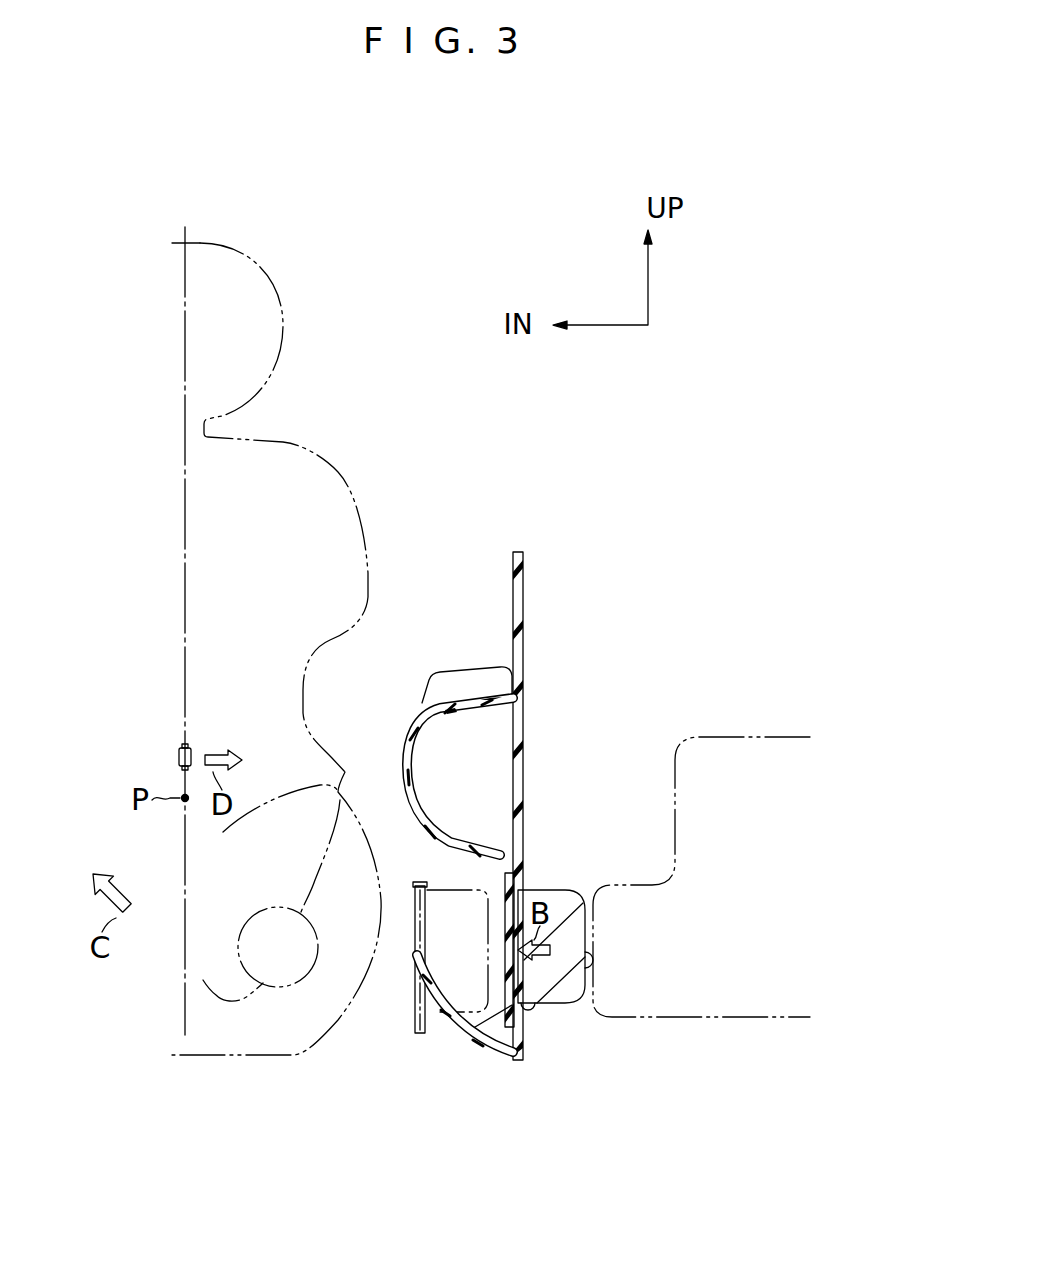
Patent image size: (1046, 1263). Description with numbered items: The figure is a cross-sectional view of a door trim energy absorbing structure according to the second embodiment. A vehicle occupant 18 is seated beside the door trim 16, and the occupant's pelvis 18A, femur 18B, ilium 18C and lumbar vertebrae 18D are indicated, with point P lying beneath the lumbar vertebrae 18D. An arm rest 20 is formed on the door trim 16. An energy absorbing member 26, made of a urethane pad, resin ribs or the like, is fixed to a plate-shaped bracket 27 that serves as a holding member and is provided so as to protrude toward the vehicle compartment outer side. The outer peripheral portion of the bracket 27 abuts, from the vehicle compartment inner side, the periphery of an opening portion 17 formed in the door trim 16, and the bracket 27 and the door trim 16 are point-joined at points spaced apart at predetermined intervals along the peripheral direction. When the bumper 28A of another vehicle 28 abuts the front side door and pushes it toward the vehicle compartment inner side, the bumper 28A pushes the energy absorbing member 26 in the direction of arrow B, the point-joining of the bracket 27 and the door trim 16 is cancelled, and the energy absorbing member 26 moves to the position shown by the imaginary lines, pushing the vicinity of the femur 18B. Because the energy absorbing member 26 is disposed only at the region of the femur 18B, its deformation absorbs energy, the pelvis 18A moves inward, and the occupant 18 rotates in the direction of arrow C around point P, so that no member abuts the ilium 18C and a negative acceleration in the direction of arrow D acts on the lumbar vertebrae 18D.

The door trim 16 is at (462, 578).
The opening portion 17 is at (537, 1006).
The vehicle occupant 18 is at (338, 472).
The pelvis 18A is at (216, 995).
The femur 18B is at (296, 988).
The ilium 18C is at (341, 780).
The lumbar vertebrae 18D is at (198, 752).
The arm rest 20 is at (456, 669).
The energy absorbing member 26 is at (470, 893).
The bracket 27 is at (410, 1044).
The another vehicle 28 is at (732, 737).
The bumper 28A is at (598, 970).